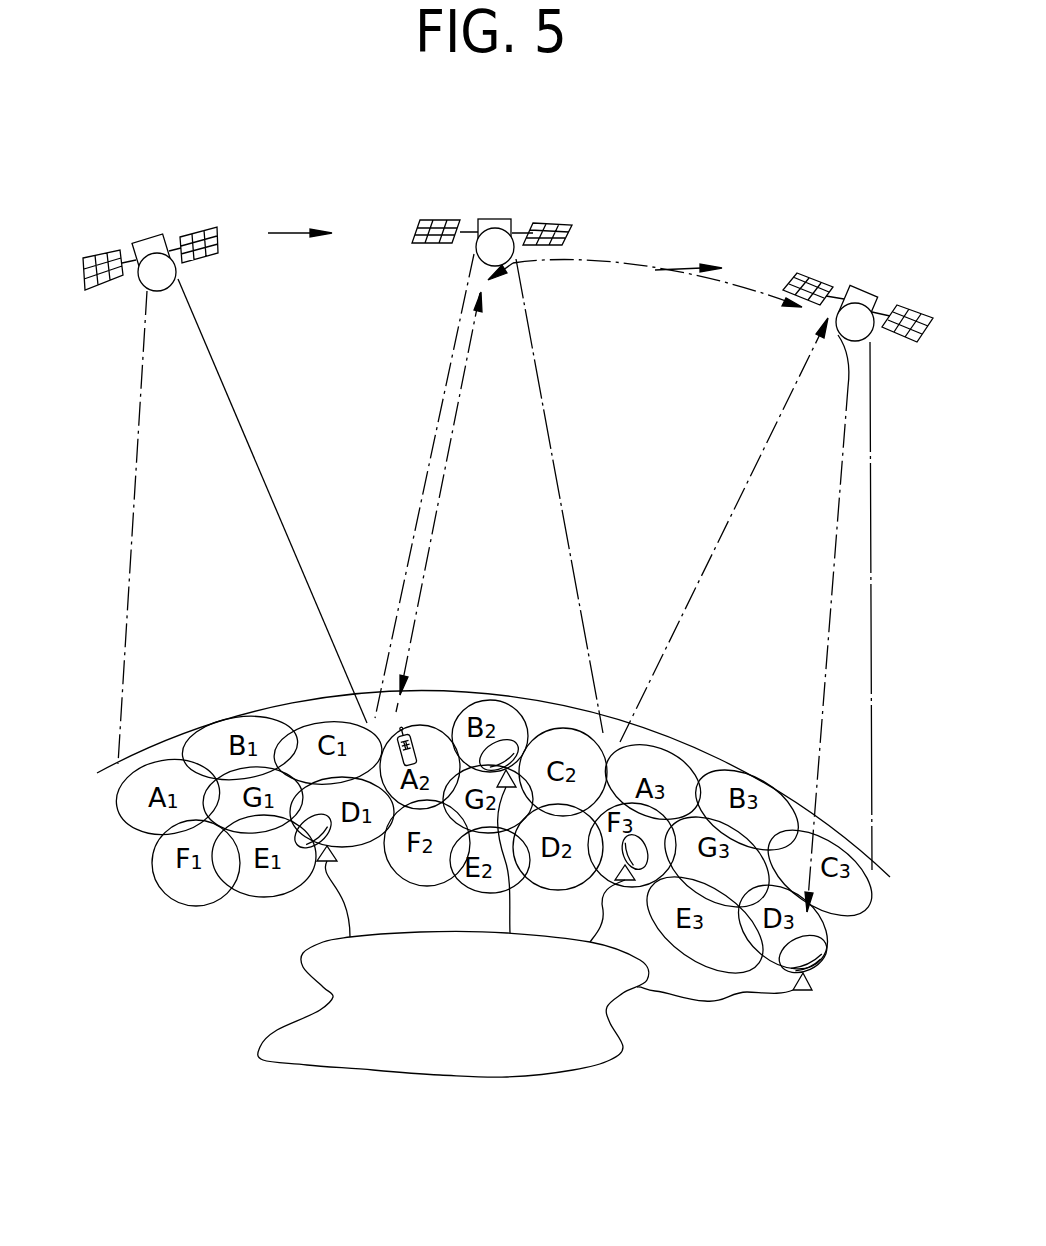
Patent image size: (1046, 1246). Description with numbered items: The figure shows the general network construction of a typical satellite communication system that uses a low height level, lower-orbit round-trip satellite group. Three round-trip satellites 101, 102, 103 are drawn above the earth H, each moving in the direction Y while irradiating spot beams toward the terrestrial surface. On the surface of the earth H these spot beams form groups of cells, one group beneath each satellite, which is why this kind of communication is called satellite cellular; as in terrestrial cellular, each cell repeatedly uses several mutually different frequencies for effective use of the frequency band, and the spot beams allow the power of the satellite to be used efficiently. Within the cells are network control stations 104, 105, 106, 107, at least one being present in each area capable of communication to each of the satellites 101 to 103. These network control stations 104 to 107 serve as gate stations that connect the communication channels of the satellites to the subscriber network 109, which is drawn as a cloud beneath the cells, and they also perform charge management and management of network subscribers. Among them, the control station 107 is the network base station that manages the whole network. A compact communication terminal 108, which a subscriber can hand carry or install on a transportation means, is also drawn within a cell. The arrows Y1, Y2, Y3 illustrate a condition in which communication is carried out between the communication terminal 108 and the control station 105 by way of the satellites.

The round-trip satellite 101 is at (147, 237).
The round-trip satellite 102 is at (497, 219).
The round-trip satellite 103 is at (860, 287).
The network control station 104 is at (335, 845).
The network control station 105 is at (817, 967).
The network control station 106 is at (613, 867).
The network base station 107 is at (500, 742).
The compact communication terminal 108 is at (412, 734).
The subscriber network 109 is at (627, 1037).
The direction of satellite movement Y is at (290, 232).
The communication arrow Y1 is at (840, 492).
The communication arrow Y2 is at (604, 262).
The communication arrow Y3 is at (452, 447).
The earth H is at (103, 748).